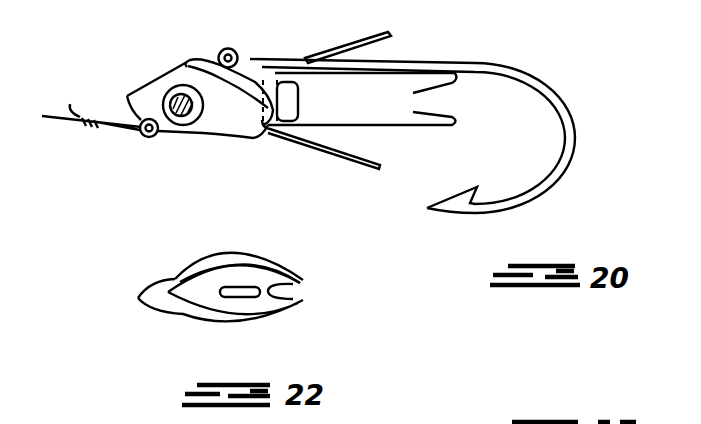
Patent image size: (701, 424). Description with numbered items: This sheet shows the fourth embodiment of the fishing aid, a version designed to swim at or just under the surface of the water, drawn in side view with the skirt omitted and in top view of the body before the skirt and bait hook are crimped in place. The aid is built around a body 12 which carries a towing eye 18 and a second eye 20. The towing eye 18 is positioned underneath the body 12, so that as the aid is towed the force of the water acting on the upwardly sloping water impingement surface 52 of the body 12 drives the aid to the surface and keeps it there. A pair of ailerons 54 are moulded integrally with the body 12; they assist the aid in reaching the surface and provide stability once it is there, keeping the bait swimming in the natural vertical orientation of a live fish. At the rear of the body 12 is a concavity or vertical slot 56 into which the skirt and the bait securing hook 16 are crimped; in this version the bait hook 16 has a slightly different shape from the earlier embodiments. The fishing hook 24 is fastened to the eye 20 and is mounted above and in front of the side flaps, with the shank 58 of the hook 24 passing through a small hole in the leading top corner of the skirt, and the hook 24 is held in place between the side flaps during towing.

In FIG. 20, the body 12 is at (159, 83).
In FIG. 22, the body 12 is at (182, 292).
In FIG. 20, the bait securing hook 16 is at (410, 132).
In FIG. 20, the towing eye 18 is at (163, 138).
In FIG. 20, the eye 20 is at (237, 53).
In FIG. 20, the fishing hook 24 is at (568, 162).
In FIG. 20, the water impingement surface 52 is at (197, 143).
In FIG. 20, the ailerons 54 is at (188, 62).
In FIG. 22, the ailerons 54 is at (223, 325).
In FIG. 22, the vertical slot 56 is at (292, 292).
In FIG. 20, the shank 58 is at (310, 58).